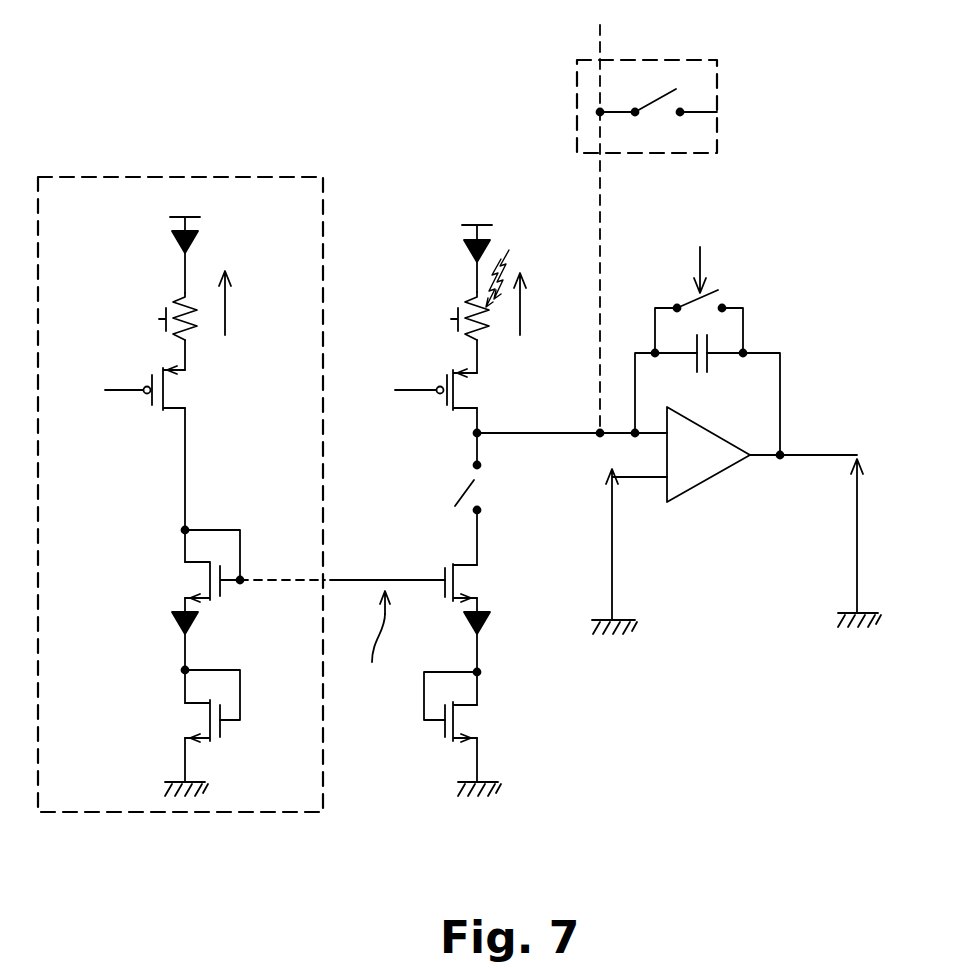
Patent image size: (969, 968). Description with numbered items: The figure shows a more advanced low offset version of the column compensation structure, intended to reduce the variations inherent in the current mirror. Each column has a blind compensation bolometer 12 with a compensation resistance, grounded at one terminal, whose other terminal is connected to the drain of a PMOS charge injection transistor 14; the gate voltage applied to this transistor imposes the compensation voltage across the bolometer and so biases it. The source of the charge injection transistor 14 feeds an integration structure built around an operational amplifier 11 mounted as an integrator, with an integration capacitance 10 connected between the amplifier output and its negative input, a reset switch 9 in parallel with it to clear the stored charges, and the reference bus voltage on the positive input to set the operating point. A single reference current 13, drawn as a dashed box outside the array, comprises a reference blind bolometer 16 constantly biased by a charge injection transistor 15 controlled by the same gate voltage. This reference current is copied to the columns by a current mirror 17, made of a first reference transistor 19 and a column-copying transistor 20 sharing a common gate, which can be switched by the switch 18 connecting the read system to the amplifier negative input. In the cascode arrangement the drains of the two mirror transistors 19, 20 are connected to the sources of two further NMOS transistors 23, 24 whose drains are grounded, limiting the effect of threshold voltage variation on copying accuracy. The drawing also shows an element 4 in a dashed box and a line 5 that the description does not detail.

The sensor pixel switch 4 is at (656, 103).
The bus line 5 is at (600, 181).
The reset switch 9 is at (690, 300).
The integration capacitance 10 is at (705, 358).
The operational amplifier 11 is at (710, 468).
The blind compensation bolometer 12 is at (487, 334).
The reference current 13 is at (268, 177).
The charge injection transistor 14 is at (468, 392).
The charge injection transistor 15 is at (178, 390).
The blind bolometer 16 is at (192, 333).
The current mirror 17 is at (342, 639).
The switch 18 is at (458, 487).
The first reference transistor 19 is at (195, 578).
The column-copying transistor 20 is at (473, 585).
The NMOS transistor 23 is at (192, 722).
The NMOS transistor 24 is at (475, 722).